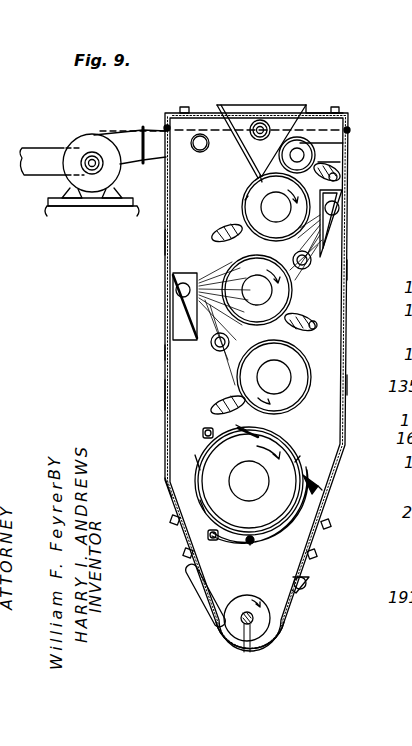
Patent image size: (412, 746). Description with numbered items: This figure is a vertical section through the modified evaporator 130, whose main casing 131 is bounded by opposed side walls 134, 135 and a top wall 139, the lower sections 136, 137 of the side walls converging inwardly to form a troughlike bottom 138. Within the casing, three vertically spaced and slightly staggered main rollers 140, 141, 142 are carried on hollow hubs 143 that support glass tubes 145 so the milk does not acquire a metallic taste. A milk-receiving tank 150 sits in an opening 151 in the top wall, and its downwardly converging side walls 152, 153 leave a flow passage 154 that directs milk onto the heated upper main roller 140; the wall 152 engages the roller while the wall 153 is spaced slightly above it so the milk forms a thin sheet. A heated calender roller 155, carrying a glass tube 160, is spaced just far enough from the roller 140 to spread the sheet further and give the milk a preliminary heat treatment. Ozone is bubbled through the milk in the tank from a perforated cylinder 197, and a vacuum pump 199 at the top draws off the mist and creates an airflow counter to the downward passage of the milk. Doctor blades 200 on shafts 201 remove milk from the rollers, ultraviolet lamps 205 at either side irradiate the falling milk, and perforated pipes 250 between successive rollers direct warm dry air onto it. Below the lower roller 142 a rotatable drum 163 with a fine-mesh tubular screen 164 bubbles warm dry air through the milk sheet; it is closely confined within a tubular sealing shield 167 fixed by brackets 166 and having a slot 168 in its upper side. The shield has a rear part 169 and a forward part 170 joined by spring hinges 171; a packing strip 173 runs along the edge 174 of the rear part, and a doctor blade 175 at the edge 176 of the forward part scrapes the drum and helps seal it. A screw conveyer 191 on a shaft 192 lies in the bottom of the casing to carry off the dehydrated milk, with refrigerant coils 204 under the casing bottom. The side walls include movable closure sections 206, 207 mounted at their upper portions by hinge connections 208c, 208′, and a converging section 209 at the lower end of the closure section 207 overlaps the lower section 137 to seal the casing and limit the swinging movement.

The modified evaporator 130 is at (300, 66).
The main casing 131 is at (163, 390).
The side wall 134 is at (350, 267).
The side wall 135 is at (165, 243).
The lower section of side wall 136 is at (302, 567).
The lower section of side wall 137 is at (187, 537).
The troughlike bottom 138 is at (268, 642).
The top wall 139 is at (198, 110).
The main roller 140 is at (240, 213).
The main roller 141 is at (292, 297).
The main roller 142 is at (325, 352).
The hollow hub 143 is at (257, 180).
The glass tube 145 is at (243, 198).
The milk-receiving tank 150 is at (245, 105).
The opening 151 is at (311, 109).
The tank side wall 152 is at (244, 98).
The tank side wall 153 is at (290, 110).
The flow passage 154 is at (258, 167).
The calender roller 155 is at (323, 152).
The glass tube 160 is at (347, 136).
The rotatable drum 163 is at (311, 459).
The tubular screen 164 is at (287, 528).
The bracket 166 is at (202, 433).
The tubular sealing shield 167 is at (195, 458).
The slot 168 is at (299, 437).
The rear part of sealing shield 169 is at (193, 497).
The forward part of sealing shield 170 is at (305, 508).
The spring hinge 171 is at (250, 544).
The packing strip 173 is at (250, 426).
The edge of rear part 174 is at (240, 427).
The doctor blade 175 is at (313, 482).
The longitudinal edge of forward part 176 is at (317, 492).
The screw conveyer 191 is at (258, 623).
The shaft 192 is at (243, 615).
The perforated cylinder 197 is at (261, 120).
The vacuum pump 199 is at (68, 139).
The doctor blade 200 is at (340, 170).
The shaft 201 is at (345, 182).
The coil 204 is at (208, 597).
The lamp 205 is at (334, 223).
The closure section 206 is at (348, 387).
The closure section 207 is at (165, 353).
The hinge connection 208c is at (166, 126).
The hinge connection 208′ is at (349, 128).
The converging section 209 is at (165, 488).
The perforated pipe 250 is at (311, 262).